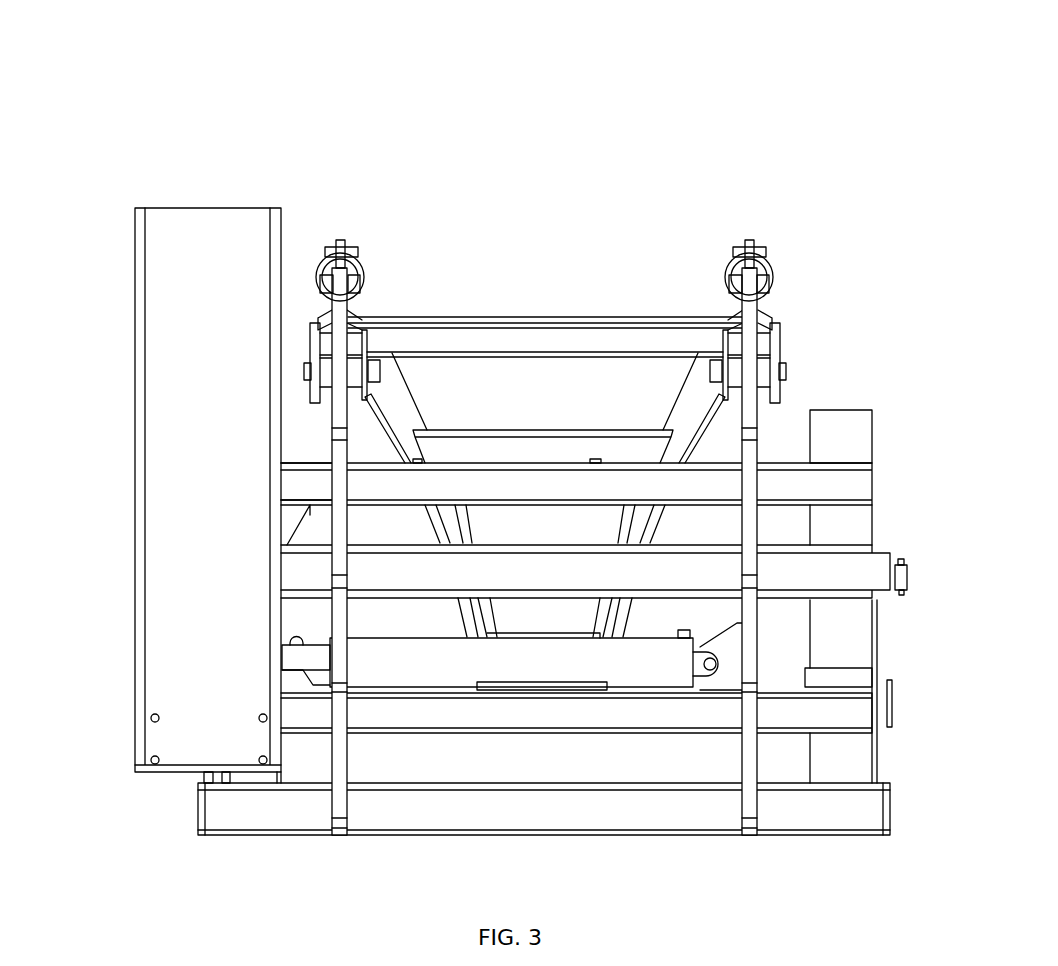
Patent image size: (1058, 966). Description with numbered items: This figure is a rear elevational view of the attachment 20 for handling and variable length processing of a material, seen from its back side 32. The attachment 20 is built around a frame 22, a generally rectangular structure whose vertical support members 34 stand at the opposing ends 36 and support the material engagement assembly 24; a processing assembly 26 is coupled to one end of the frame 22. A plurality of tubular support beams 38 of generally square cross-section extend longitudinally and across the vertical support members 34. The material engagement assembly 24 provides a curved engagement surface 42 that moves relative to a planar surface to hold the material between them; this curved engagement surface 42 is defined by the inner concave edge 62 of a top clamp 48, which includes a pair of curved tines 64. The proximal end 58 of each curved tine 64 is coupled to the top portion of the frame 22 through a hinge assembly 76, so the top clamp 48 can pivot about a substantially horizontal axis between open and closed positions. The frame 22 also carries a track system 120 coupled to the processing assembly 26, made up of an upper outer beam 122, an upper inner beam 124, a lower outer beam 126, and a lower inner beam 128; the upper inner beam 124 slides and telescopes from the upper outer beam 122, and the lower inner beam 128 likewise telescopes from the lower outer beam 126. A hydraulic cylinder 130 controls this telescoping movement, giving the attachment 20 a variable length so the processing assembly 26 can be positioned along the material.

The attachment 20 is at (235, 80).
The frame 22 is at (820, 488).
The material engagement assembly 24 is at (724, 287).
The processing assembly 26 is at (207, 230).
The back side 32 is at (378, 817).
The vertical support members 34 is at (338, 755).
The opposing ends 36 is at (227, 812).
The tubular support beams 38 is at (848, 493).
The curved engagement surface 42 is at (418, 412).
The top clamp 48 is at (388, 380).
The proximal end 58 is at (318, 335).
The inner concave edge 62 is at (438, 537).
The curved tines 64 is at (397, 438).
The hinge assembly 76 is at (307, 357).
The track system 120 is at (312, 473).
The upper outer beam 122 is at (363, 490).
The upper inner beam 124 is at (300, 488).
The lower outer beam 126 is at (263, 762).
The lower inner beam 128 is at (307, 715).
The hydraulic cylinder 130 is at (387, 660).